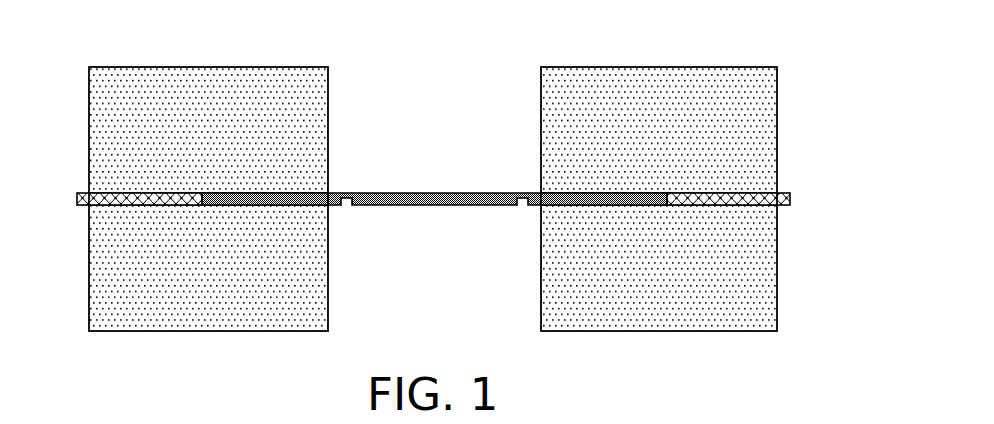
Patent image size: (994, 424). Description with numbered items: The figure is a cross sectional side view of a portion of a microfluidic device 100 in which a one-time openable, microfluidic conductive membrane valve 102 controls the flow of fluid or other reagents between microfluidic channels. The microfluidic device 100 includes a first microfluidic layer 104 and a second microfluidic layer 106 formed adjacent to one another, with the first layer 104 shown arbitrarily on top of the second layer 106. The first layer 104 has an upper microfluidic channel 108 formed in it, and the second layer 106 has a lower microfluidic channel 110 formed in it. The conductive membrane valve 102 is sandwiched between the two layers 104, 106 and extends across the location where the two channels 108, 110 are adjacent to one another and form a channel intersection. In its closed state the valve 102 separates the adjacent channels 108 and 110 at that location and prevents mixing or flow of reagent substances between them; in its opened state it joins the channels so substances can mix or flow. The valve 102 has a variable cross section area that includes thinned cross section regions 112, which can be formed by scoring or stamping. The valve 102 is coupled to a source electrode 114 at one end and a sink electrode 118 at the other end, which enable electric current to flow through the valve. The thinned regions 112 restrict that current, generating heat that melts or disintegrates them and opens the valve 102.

The microfluidic device 100 is at (437, 165).
The conductive membrane valve 102 is at (437, 191).
The first microfluidic layer 104 is at (778, 131).
The second microfluidic layer 106 is at (778, 282).
The upper microfluidic channel 108 is at (446, 114).
The lower microfluidic channel 110 is at (446, 302).
The thinned cross section region 112 is at (350, 208).
The source electrode 114 is at (78, 193).
The sink electrode 118 is at (790, 193).